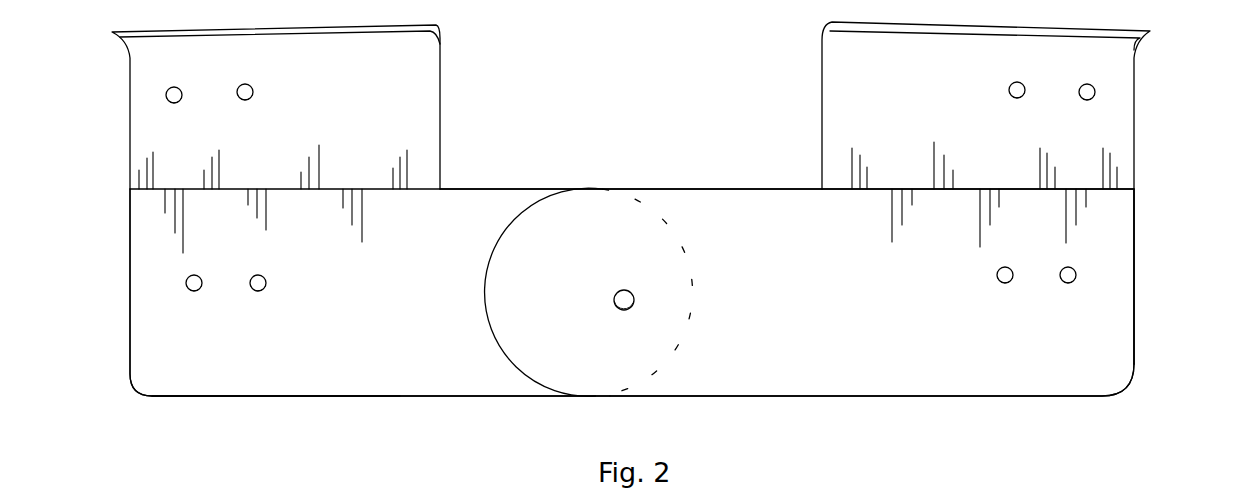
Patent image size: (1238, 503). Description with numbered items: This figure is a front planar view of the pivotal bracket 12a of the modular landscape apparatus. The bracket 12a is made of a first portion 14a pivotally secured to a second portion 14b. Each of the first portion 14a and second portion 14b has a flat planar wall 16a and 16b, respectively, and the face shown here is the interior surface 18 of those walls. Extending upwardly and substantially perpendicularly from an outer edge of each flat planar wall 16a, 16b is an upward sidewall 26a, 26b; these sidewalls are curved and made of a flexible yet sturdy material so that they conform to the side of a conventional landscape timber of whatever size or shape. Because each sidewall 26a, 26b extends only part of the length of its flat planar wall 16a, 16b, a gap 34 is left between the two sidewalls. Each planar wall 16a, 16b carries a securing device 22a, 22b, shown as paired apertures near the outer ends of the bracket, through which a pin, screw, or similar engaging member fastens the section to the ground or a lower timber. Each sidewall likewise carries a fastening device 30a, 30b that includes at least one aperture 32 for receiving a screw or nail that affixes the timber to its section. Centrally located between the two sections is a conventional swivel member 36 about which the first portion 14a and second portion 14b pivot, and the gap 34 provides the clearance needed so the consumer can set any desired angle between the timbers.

The pivotal bracket 12a is at (1006, 421).
The first portion 14a is at (270, 375).
The second portion 14b is at (1127, 240).
The flat planar wall 16a is at (348, 370).
The flat planar wall 16b is at (1082, 385).
The interior surface 18 is at (1120, 315).
The securing device 22a is at (264, 282).
The securing device 22b is at (997, 277).
The upward sidewall 26a is at (422, 120).
The upward sidewall 26b is at (1122, 134).
The fastening device 30a is at (254, 92).
The fastening device 30b is at (1010, 88).
The aperture 32 is at (167, 107).
The gap 34 is at (597, 131).
The swivel member 36 is at (656, 238).